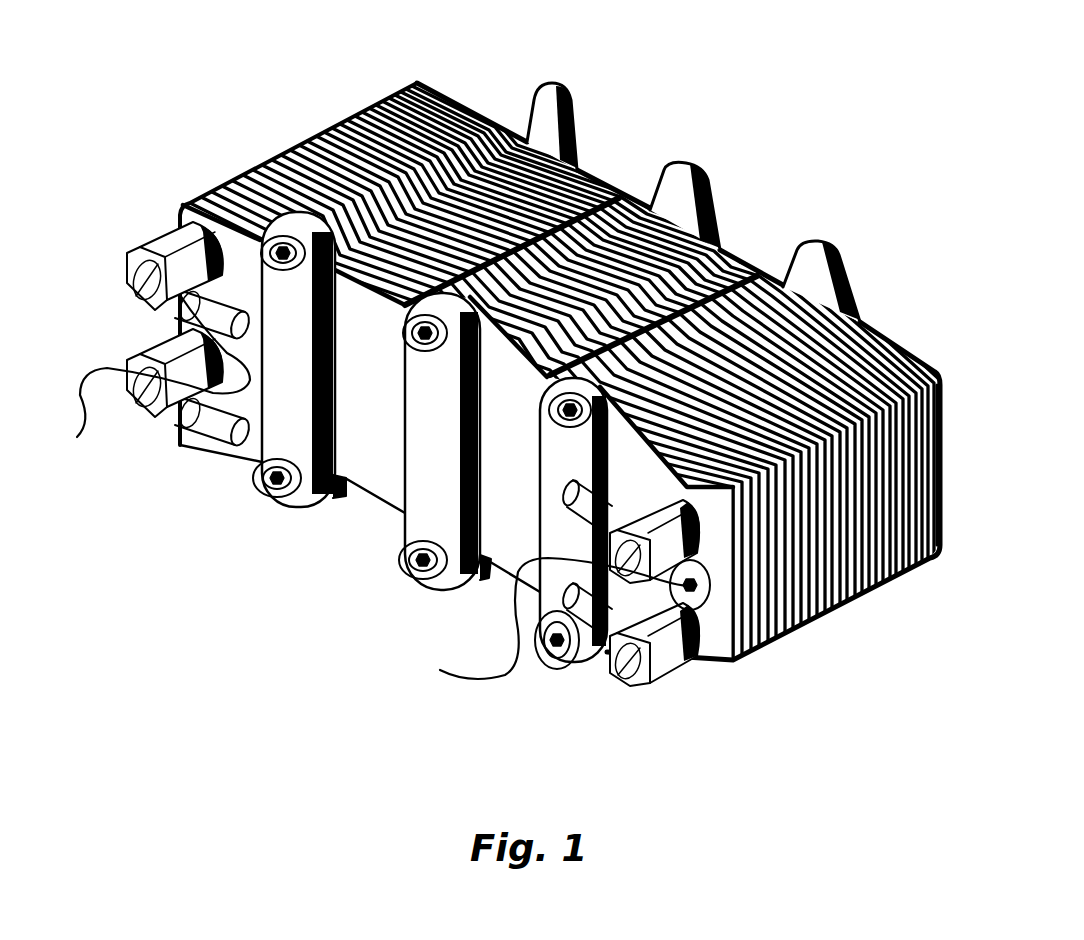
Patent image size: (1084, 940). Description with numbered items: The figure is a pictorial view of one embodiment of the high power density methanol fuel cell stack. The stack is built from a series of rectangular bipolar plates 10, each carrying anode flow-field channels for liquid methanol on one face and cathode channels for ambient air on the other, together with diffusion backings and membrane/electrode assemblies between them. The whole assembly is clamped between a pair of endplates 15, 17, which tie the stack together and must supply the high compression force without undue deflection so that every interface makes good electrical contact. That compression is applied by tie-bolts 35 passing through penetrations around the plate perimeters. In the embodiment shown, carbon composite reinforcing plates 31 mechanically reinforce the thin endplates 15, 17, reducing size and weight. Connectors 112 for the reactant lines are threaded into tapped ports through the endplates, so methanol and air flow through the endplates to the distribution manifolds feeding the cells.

The bipolar plate 10 is at (400, 78).
The endplate 17 is at (437, 97).
The endplate 15 is at (382, 403).
The carbon composite reinforcing plate 31 is at (445, 448).
The tie-bolt 35 is at (272, 480).
The connector 112 is at (145, 363).